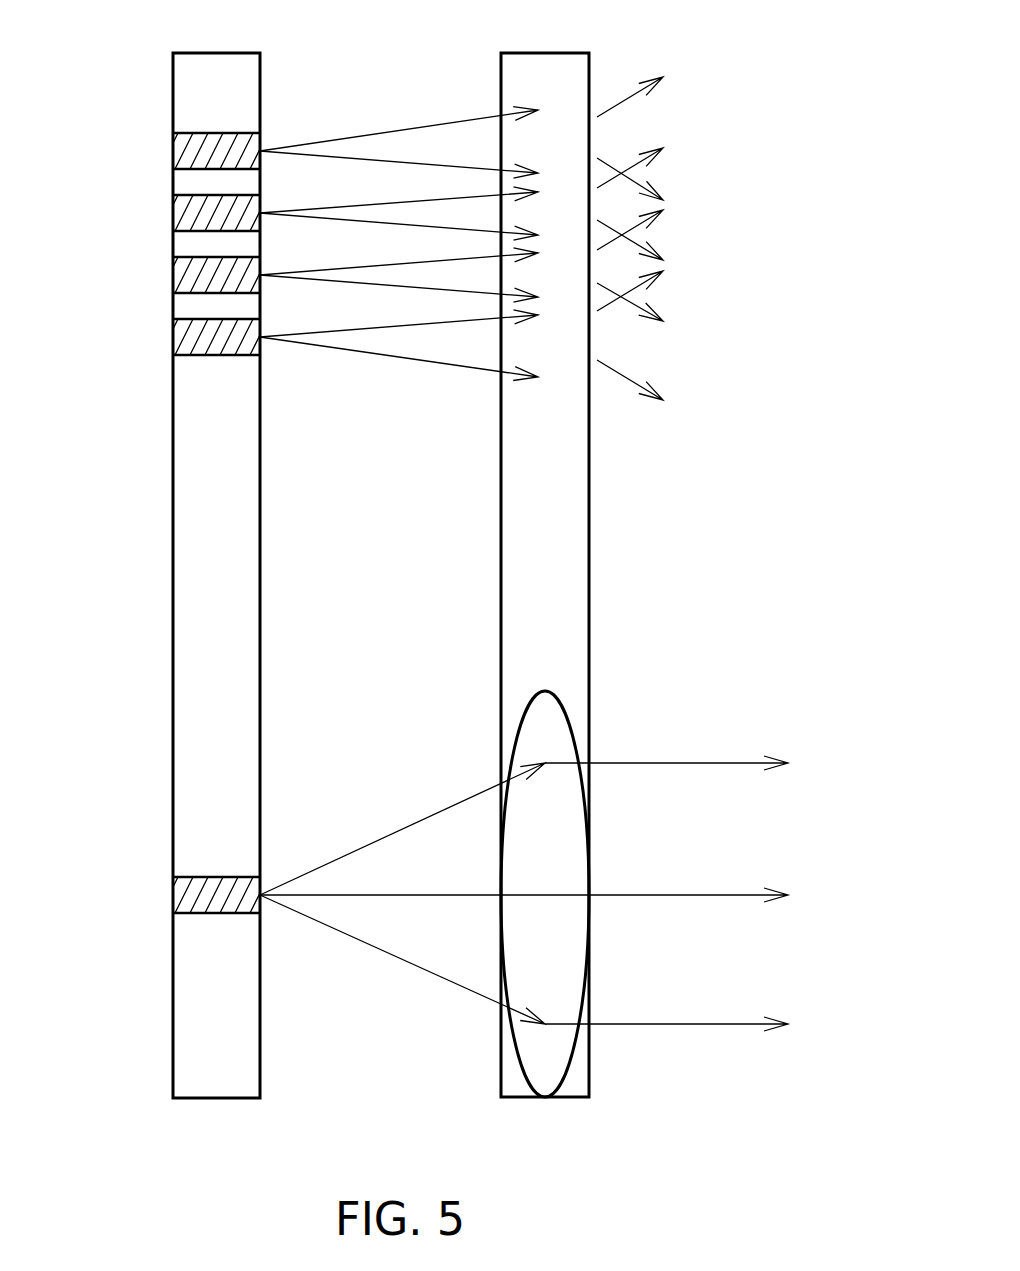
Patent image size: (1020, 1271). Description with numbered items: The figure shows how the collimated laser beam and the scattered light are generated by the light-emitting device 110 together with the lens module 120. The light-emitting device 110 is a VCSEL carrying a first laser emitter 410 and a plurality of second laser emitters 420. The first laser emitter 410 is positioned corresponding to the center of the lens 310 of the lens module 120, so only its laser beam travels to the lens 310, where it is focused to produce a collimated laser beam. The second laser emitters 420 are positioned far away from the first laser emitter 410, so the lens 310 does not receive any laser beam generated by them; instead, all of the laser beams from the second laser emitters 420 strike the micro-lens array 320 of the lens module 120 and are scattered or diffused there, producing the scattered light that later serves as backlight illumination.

The light-emitting device 110 is at (191, 52).
The lens module 120 is at (572, 52).
The lens 310 is at (555, 713).
The micro-lens array 320 is at (580, 567).
The first laser emitter 410 is at (193, 888).
The second laser emitters 420 is at (193, 146).